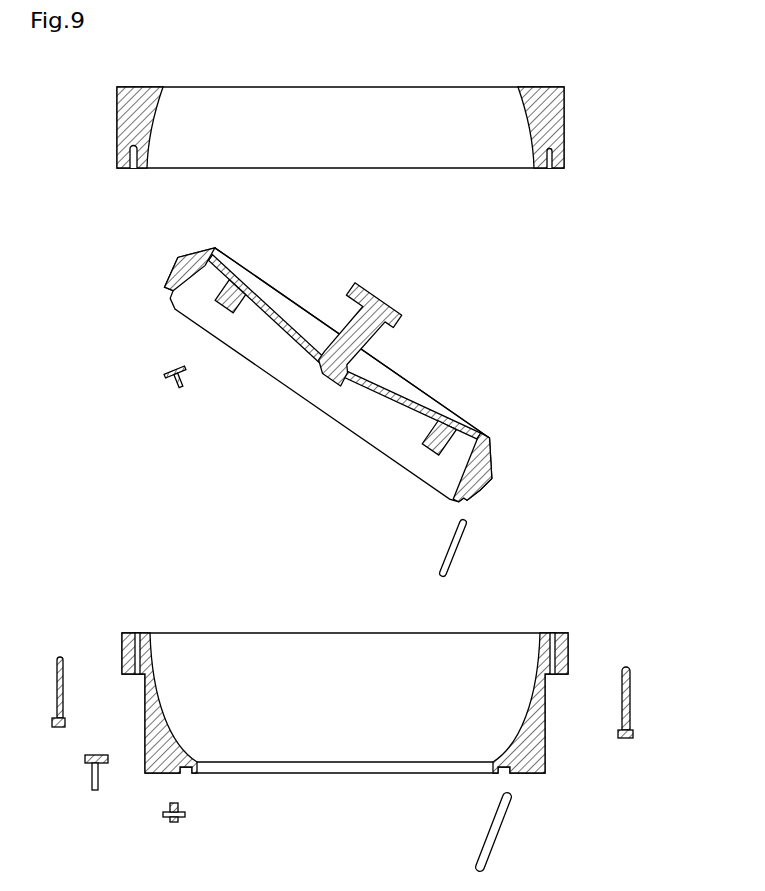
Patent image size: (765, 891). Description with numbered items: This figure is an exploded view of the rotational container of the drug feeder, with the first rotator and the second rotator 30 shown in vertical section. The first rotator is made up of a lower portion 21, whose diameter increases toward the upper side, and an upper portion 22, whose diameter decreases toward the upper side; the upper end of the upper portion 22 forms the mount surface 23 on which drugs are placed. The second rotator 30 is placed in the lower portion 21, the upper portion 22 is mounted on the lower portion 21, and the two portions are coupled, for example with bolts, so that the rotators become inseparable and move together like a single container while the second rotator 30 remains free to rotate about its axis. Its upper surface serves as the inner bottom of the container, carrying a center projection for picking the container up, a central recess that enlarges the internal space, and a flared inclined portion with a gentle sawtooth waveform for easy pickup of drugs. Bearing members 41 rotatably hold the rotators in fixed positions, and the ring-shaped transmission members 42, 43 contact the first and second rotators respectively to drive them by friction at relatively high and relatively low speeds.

The lower portion 21 is at (144, 633).
The upper portion 22 is at (418, 103).
The mount surface 23 is at (147, 87).
The second rotator 30 is at (356, 352).
The bearing member 41 is at (163, 382).
The first transmission member 42 is at (505, 828).
The second transmission member 43 is at (460, 543).